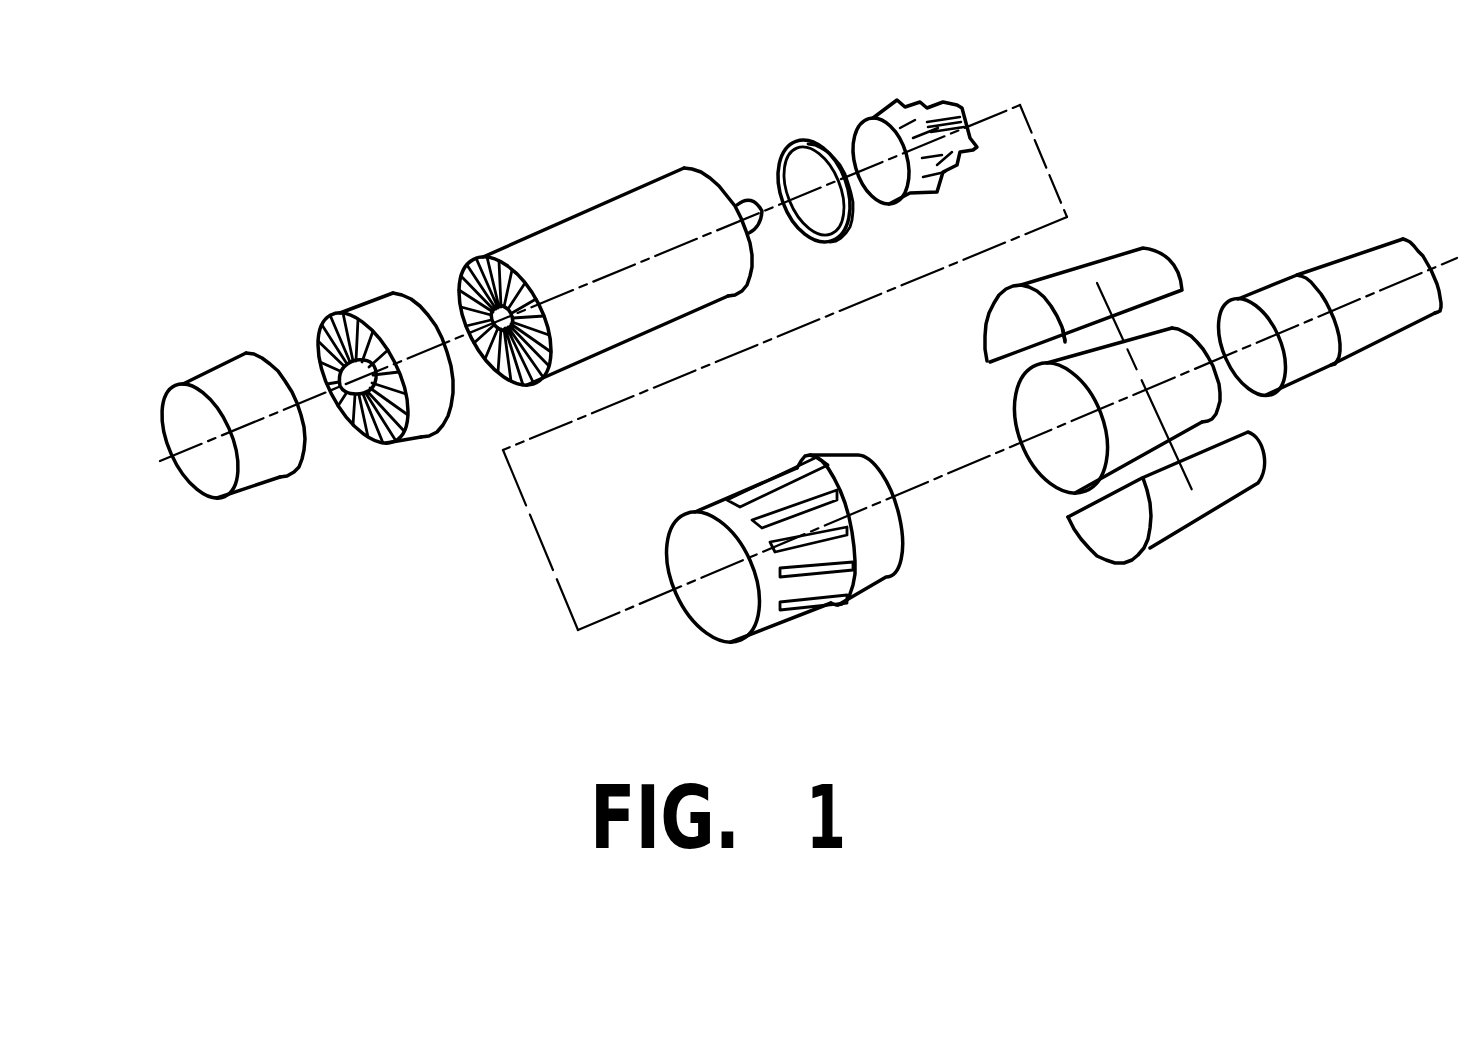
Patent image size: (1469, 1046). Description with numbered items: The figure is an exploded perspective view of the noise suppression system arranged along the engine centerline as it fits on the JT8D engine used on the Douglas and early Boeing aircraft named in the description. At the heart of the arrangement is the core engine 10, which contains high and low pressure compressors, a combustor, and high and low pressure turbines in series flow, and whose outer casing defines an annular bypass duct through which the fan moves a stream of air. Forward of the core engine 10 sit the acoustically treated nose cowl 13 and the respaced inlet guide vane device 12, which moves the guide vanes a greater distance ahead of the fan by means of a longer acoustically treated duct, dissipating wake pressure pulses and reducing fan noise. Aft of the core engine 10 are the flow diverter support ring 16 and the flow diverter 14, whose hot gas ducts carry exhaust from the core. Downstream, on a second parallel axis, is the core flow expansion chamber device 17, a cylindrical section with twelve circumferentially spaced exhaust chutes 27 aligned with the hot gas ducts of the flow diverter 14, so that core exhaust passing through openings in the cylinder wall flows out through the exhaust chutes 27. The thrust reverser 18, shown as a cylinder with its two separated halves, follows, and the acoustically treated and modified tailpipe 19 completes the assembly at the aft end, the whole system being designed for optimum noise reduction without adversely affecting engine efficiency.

The core engine 10 is at (573, 222).
The respaced inlet guide vane device 12 is at (375, 307).
The acoustically treated nose cowl 13 is at (218, 378).
The flow diverter 14 is at (885, 122).
The flow diverter support ring 16 is at (788, 147).
The core flow expansion chamber device 17 is at (818, 453).
The thrust reverser 18 is at (1040, 470).
The tailpipe 19 is at (1382, 342).
The exhaust chutes 27 is at (822, 490).